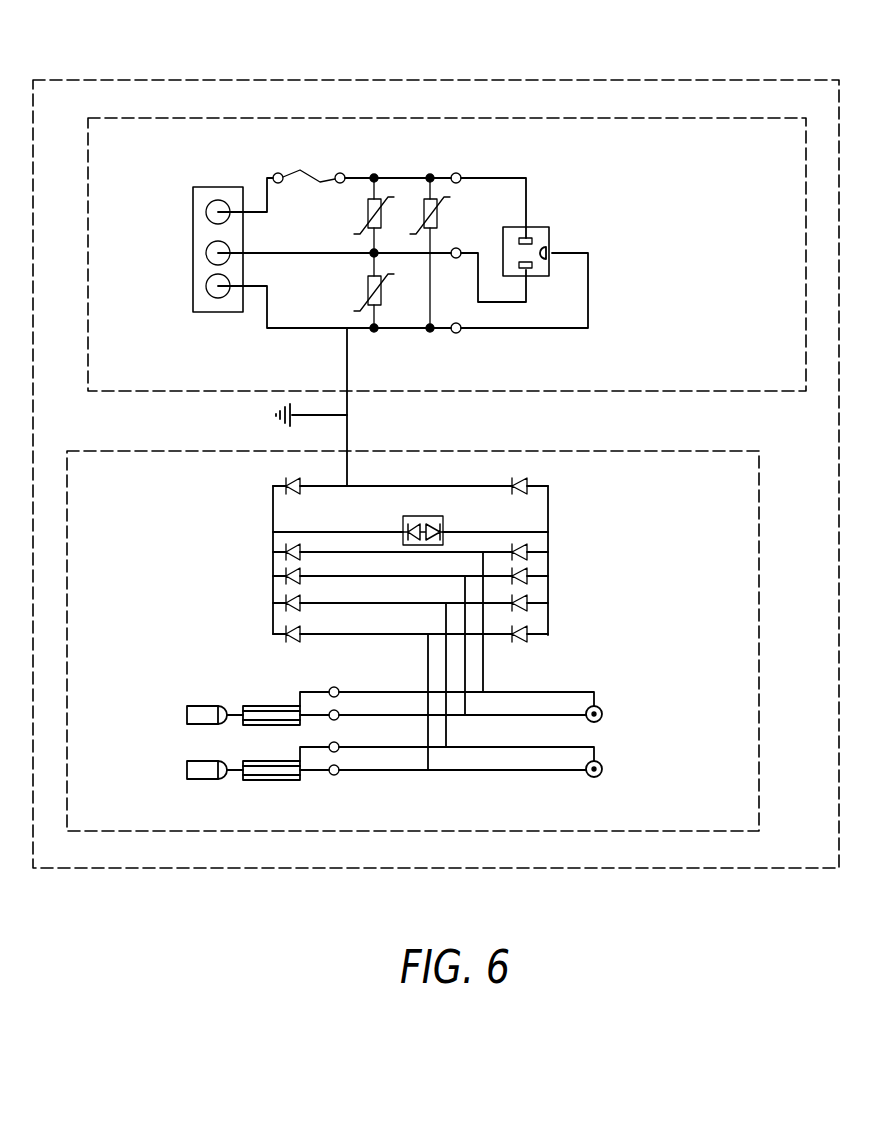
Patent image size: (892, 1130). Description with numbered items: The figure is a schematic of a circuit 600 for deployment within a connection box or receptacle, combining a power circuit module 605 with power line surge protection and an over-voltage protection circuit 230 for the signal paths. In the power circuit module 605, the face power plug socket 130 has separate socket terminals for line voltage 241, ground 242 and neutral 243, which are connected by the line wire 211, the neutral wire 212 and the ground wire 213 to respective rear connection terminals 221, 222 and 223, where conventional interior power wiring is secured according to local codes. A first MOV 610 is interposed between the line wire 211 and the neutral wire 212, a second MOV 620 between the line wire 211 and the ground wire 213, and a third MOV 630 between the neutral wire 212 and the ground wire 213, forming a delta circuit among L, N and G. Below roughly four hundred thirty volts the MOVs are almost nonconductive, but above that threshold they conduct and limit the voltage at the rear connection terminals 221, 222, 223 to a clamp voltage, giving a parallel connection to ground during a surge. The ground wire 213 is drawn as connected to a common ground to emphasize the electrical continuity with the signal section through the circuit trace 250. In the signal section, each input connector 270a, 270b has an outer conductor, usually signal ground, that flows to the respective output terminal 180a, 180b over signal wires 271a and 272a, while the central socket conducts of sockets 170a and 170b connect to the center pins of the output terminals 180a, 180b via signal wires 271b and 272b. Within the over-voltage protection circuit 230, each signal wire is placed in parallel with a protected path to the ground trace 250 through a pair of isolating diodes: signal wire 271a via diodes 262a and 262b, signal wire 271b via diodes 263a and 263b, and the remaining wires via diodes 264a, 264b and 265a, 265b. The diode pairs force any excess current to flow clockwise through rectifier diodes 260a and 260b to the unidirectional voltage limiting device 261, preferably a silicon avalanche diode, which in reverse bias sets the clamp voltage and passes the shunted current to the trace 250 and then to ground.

The circuit 600 is at (600, 66).
The power circuit module 605 is at (300, 168).
The line wire 211 is at (410, 176).
The neutral wire 212 is at (306, 251).
The ground wire 213 is at (322, 331).
The rear connection terminal 221 is at (207, 208).
The rear connection terminal 222 is at (206, 253).
The rear connection terminal 223 is at (210, 293).
The first MOV 610 is at (364, 207).
The second MOV 620 is at (438, 220).
The third MOV 630 is at (366, 287).
The face power plug socket 130 is at (572, 242).
The line voltage socket terminal 241 is at (532, 238).
The ground socket terminal 242 is at (551, 249).
The neutral socket terminal 243 is at (529, 269).
The circuit trace 250 is at (349, 407).
The over-voltage protection circuit 230 is at (670, 439).
The rectifier diode 260a is at (290, 484).
The rectifier diode 260b is at (530, 483).
The unidirectional voltage limiting device 261 is at (427, 516).
The isolating diode 262a is at (289, 553).
The isolating diode 262b is at (530, 549).
The isolating diode 263a is at (290, 574).
The isolating diode 263b is at (530, 576).
The isolating diode 264a is at (290, 605).
The isolating diode 264b is at (529, 604).
The isolating diode 265a is at (289, 637).
The isolating diode 265b is at (529, 637).
The input connector 270a is at (522, 686).
The input connector 270b is at (537, 763).
The signal wire 271a is at (563, 691).
The signal wire 271b is at (560, 714).
The signal wire 272a is at (562, 746).
The signal wire 272b is at (558, 770).
The socket 170a is at (602, 710).
The socket 170b is at (602, 764).
The output terminal 180a is at (190, 708).
The output terminal 180b is at (198, 773).